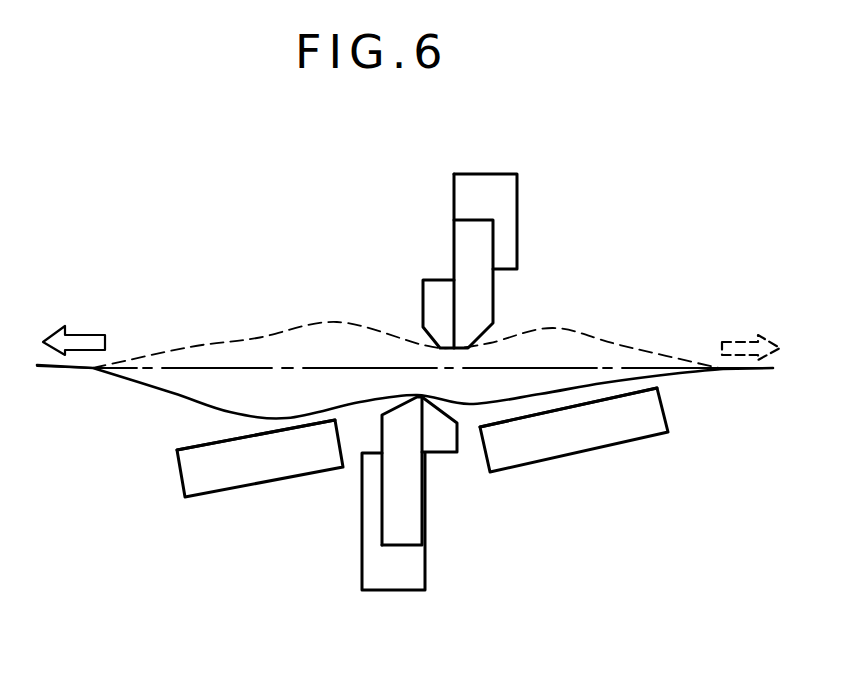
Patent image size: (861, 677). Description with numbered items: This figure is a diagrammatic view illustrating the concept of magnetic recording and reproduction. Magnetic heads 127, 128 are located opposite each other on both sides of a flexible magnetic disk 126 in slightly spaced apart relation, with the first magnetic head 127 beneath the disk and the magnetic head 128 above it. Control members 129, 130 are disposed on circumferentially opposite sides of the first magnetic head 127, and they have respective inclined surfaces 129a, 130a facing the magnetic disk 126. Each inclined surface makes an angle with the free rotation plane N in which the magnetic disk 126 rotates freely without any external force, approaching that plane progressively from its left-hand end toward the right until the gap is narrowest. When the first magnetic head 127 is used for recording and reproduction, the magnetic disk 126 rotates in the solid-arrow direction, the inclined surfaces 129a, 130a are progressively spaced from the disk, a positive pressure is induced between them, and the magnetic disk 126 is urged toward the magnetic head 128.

The flexible magnetic disk 126 is at (173, 394).
The first magnetic head 127 is at (440, 452).
The magnetic head 128 is at (432, 300).
The control member 129 is at (260, 477).
The inclined surface 129a is at (197, 445).
The control member 130 is at (625, 437).
The inclined surface 130a is at (528, 412).
The free rotation plane N is at (263, 368).